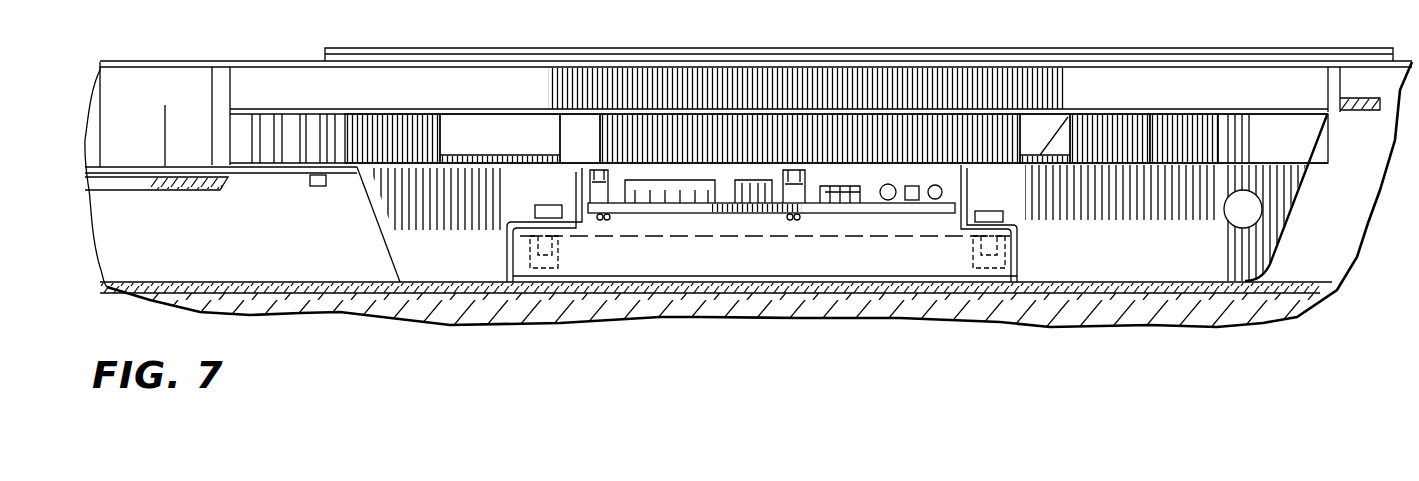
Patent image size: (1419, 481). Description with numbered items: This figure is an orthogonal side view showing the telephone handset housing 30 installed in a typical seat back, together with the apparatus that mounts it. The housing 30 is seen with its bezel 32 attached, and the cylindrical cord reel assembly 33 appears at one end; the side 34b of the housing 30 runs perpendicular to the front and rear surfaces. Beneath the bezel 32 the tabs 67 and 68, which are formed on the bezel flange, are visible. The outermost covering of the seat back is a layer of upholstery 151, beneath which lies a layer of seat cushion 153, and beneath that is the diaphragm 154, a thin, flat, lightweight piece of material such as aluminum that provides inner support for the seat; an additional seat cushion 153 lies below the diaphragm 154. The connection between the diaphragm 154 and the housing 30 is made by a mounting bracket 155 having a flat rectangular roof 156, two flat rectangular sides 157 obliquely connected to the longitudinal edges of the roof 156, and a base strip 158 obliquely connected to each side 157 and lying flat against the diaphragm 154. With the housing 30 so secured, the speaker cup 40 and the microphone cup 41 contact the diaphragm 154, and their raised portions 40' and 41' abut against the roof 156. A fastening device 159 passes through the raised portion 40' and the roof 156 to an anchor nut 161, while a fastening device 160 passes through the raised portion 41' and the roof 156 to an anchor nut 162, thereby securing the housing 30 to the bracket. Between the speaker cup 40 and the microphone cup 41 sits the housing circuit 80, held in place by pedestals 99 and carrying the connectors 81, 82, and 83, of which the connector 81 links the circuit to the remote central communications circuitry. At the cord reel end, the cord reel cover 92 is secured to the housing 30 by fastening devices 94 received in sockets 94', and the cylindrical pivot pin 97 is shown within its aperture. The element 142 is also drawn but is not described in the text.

The telephone handset housing 30 is at (160, 38).
The bezel 32 is at (993, 48).
The cord reel assembly 33 is at (90, 100).
The side 34b is at (933, 80).
The speaker cup 40 is at (1282, 198).
The raised portion 40' is at (1090, 223).
The microphone cup 41 is at (406, 224).
The raised portion 41' is at (502, 225).
The tab 67 is at (1133, 125).
The tab 68 is at (407, 128).
The housing circuit 80 is at (762, 218).
The connector 81 is at (680, 180).
The connector 82 is at (756, 180).
The connector 83 is at (845, 185).
The cord reel cover 92 is at (130, 178).
The fastening device 94 is at (302, 197).
The socket 94' is at (307, 124).
The pivot pin 97 is at (1250, 205).
The pedestal 99 is at (590, 178).
The end tab 142 is at (1344, 96).
The upholstery 151 is at (202, 61).
The seat cushion 153 is at (1363, 180).
The diaphragm 154 is at (1310, 285).
The mounting bracket 155 is at (1028, 247).
The roof 156 is at (697, 233).
The side 157 is at (880, 262).
The base strip 158 is at (795, 283).
The fastening device 159 is at (972, 242).
The fastening device 160 is at (560, 250).
The anchor nut 161 is at (985, 270).
The anchor nut 162 is at (530, 282).